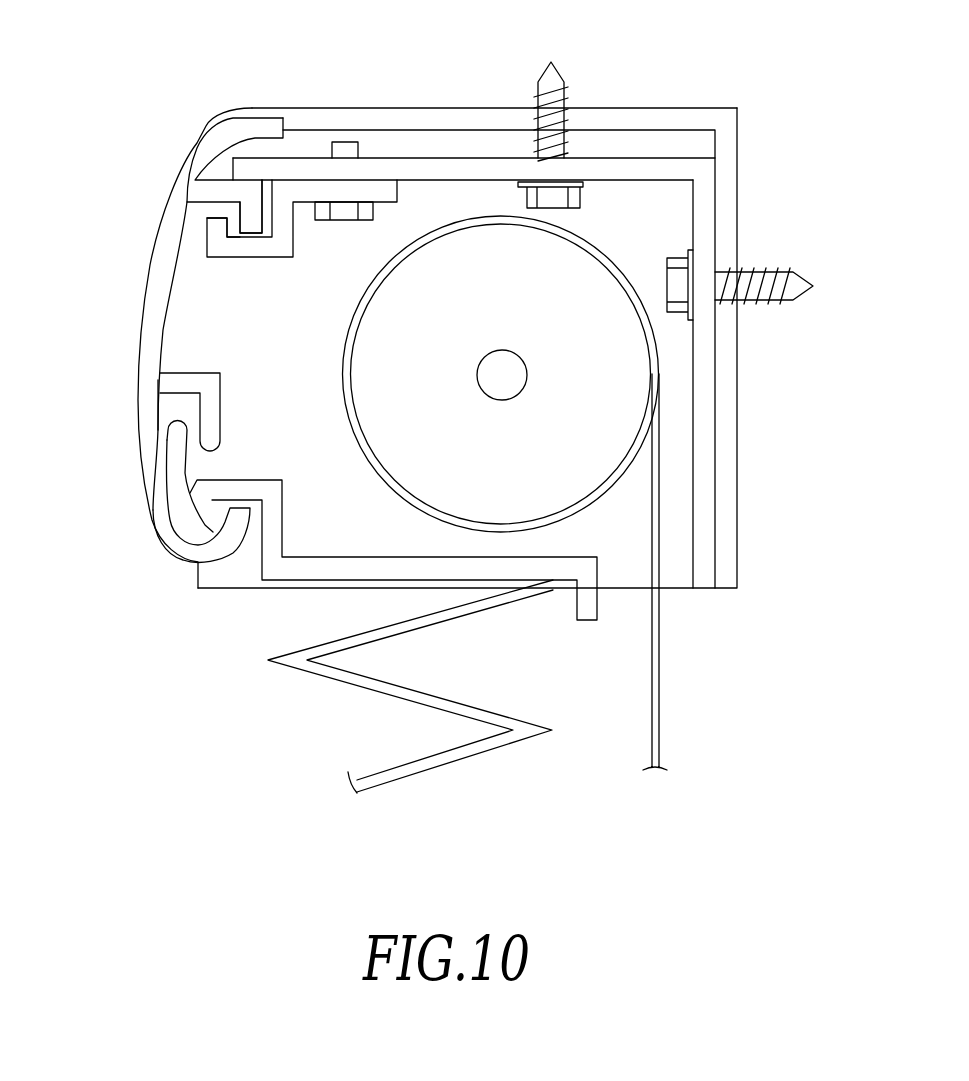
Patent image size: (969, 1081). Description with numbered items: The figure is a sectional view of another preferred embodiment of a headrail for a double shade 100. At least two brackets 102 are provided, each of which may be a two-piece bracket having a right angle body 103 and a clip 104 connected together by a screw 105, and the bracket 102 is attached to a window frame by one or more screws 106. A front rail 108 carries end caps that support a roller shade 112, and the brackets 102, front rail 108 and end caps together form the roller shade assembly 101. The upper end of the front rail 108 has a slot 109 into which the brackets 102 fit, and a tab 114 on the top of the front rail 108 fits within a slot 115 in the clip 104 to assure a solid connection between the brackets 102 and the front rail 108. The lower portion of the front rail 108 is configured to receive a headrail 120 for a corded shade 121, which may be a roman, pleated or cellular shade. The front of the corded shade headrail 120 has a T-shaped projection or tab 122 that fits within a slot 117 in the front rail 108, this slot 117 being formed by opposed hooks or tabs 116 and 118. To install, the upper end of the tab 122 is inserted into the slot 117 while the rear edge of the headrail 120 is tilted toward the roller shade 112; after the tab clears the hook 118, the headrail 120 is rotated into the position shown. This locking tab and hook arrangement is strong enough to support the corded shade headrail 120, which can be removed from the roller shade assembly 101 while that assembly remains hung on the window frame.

The headrail for a double shade 100 is at (267, 92).
The roller shade assembly 101 is at (167, 128).
The bracket 102 is at (722, 180).
The right angle body 103 is at (455, 158).
The clip 104 is at (237, 257).
The screw 105 is at (363, 222).
The screw 106 is at (560, 73).
The front rail 108 is at (142, 300).
The slot 109 is at (270, 150).
The roller shade 112 is at (737, 113).
The tab 114 is at (253, 218).
The slot 115 is at (232, 227).
The hook 116 is at (212, 400).
The slot 117 is at (173, 407).
The hook 118 is at (197, 552).
The headrail 120 is at (297, 568).
The corded shade 121 is at (410, 772).
The T-shaped projection or tab 122 is at (182, 460).